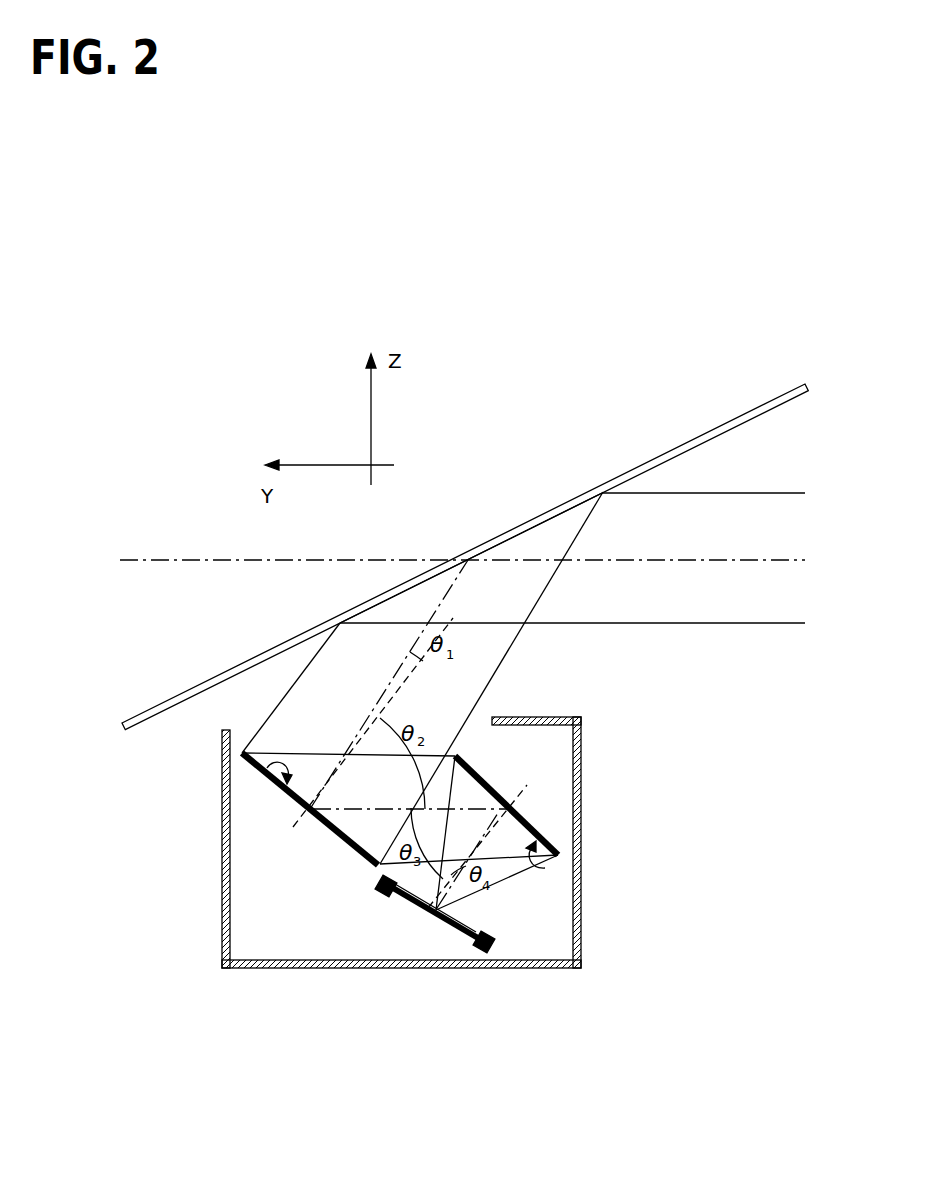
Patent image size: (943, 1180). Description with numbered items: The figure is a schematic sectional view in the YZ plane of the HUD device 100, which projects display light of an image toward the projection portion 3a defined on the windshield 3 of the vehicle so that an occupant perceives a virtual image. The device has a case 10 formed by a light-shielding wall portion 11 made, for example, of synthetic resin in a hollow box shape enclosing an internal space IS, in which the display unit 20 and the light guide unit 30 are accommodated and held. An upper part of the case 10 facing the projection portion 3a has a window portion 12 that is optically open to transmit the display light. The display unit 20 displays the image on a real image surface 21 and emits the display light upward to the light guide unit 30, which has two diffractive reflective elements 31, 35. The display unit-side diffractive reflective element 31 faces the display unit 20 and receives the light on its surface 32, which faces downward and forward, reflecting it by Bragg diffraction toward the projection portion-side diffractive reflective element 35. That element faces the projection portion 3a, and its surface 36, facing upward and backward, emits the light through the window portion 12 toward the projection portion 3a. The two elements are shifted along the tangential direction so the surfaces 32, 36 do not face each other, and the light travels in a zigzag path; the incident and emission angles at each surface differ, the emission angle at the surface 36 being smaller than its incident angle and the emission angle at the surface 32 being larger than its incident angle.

The windshield 3 is at (707, 432).
The projection portion 3a is at (577, 510).
The window portion 12 is at (240, 737).
The HUD device 100 is at (198, 958).
The case 10 is at (391, 842).
The wall portion 11 is at (574, 928).
The internal space IS is at (297, 923).
The light guide unit 30 is at (407, 810).
The diffractive reflective element 31 is at (518, 812).
The surface 32 is at (545, 868).
The diffractive reflective element 35 is at (242, 762).
The surface 36 is at (266, 770).
The display unit 20 is at (450, 925).
The real image surface 21 is at (458, 918).